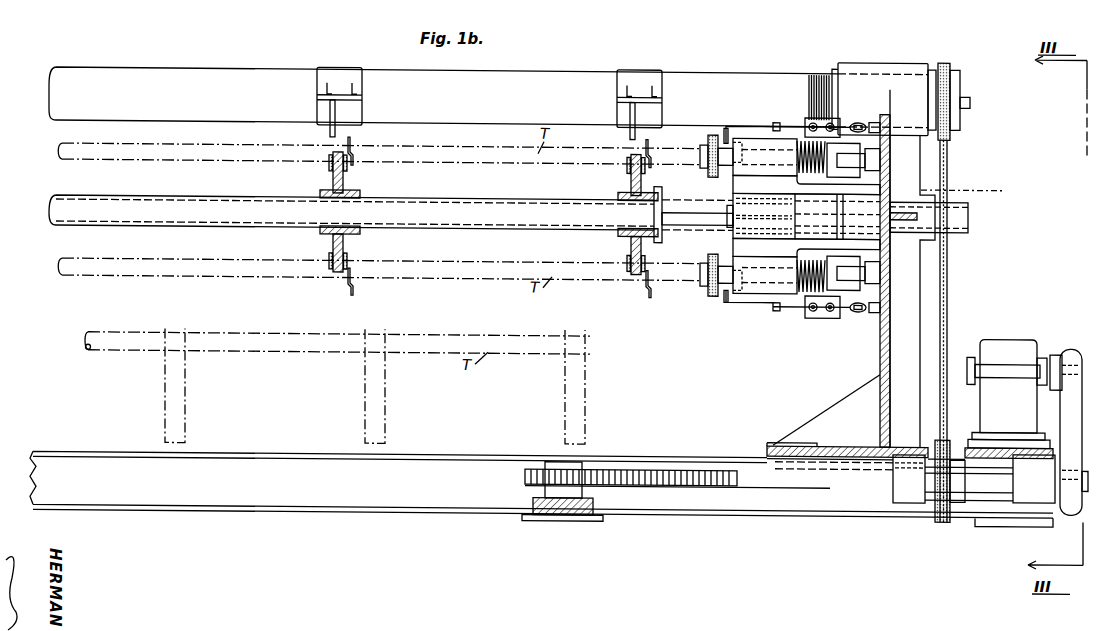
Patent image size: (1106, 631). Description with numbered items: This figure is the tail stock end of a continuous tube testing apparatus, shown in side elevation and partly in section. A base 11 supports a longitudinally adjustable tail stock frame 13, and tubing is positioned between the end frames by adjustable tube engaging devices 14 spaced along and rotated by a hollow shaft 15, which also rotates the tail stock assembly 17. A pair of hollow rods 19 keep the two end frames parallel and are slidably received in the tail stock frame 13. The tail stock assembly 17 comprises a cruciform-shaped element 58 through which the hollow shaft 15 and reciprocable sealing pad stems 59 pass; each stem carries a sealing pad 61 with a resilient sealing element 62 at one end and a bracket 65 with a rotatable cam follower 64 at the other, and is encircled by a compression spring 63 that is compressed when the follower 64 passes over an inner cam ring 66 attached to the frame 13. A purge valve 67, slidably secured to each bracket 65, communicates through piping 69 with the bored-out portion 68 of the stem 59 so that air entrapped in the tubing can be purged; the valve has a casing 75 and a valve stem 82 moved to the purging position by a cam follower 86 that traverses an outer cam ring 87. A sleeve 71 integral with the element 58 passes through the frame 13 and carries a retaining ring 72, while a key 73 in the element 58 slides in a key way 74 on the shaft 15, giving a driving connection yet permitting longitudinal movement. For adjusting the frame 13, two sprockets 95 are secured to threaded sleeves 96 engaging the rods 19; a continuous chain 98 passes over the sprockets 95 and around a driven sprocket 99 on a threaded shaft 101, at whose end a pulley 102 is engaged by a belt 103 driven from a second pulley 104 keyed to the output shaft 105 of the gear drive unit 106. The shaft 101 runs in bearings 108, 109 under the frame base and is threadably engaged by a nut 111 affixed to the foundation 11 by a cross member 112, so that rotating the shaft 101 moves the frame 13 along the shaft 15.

The base 11 is at (254, 504).
The tail stock frame 13 is at (880, 366).
The tube engaging devices 14 is at (332, 181).
The hollow shaft 15 is at (460, 195).
The tail stock assembly 17 is at (771, 245).
The hollow rods 19 is at (276, 69).
The cruciform-shaped element 58 is at (733, 180).
The sealing pad stems 59 is at (811, 216).
The sealing pads 61 is at (700, 165).
The resilient sealing elements 62 is at (707, 140).
The compression spring 63 is at (806, 215).
The cam followers 64 is at (891, 167).
The brackets 65 is at (858, 160).
The inner cam ring 66 is at (882, 152).
The purge valve 67 is at (802, 115).
The bored-out portion 68 is at (745, 134).
The piping 69 is at (726, 120).
The sleeve 71 is at (972, 190).
The retaining ring 72 is at (936, 203).
The key 73 is at (723, 224).
The key way 74 is at (697, 220).
The casing 75 is at (806, 112).
The valve stem 82 is at (862, 115).
The cam follower 86 is at (877, 113).
The outer cam ring 87 is at (891, 113).
The sprockets 95 is at (943, 55).
The threaded sleeves 96 is at (958, 62).
The continuous chain 98 is at (947, 173).
The driven sprocket 99 is at (950, 498).
The shaft 101 is at (748, 486).
The pulley 102 is at (1066, 506).
The belt 103 is at (1070, 408).
The second pulley 104 is at (1062, 342).
The output shaft 105 is at (1052, 348).
The gear drive unit 106 is at (992, 331).
The bearing 108 is at (905, 497).
The bearing 109 is at (1025, 497).
The nut 111 is at (575, 498).
The cross member 112 is at (540, 516).